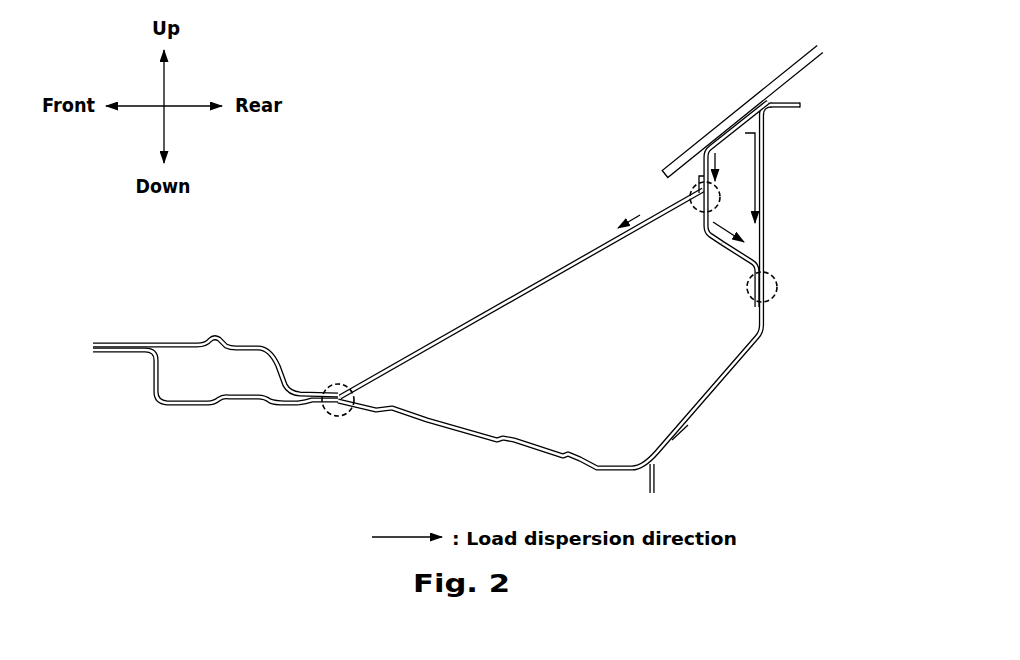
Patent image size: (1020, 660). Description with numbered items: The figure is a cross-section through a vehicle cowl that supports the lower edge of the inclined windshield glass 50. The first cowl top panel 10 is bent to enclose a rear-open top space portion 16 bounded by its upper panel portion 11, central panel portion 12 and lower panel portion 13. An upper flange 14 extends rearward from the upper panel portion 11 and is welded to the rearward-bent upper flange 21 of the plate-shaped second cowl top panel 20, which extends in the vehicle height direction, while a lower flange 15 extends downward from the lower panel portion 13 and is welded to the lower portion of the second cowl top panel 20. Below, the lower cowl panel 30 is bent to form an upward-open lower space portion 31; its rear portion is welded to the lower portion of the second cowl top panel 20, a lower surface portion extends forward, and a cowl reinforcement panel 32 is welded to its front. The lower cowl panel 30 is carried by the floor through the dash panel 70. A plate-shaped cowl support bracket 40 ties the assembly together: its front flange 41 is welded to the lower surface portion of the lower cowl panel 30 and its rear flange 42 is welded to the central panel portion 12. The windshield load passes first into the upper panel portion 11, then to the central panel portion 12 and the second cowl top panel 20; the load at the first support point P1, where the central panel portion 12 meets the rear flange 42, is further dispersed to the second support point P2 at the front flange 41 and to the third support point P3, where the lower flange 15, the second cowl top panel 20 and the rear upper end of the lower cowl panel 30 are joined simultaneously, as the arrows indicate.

The first cowl top panel 10 is at (696, 210).
The upper panel portion 11 is at (735, 128).
The central panel portion 12 is at (701, 214).
The lower panel portion 13 is at (728, 247).
The upper flange 14 is at (801, 103).
The lower flange 15 is at (756, 304).
The top space portion 16 is at (742, 212).
The second cowl top panel 20 is at (770, 176).
The upper flange 21 is at (794, 109).
The lower cowl panel 30 is at (750, 357).
The lower space portion 31 is at (360, 374).
The cowl reinforcement panel 32 is at (213, 338).
The cowl support bracket 40 is at (505, 301).
The front flange 41 is at (306, 396).
The rear flange 42 is at (699, 185).
The windshield glass 50 is at (780, 75).
The dash panel 70 is at (681, 440).
The first support point P1 is at (690, 197).
The second support point P2 is at (338, 413).
The third support point P3 is at (777, 287).